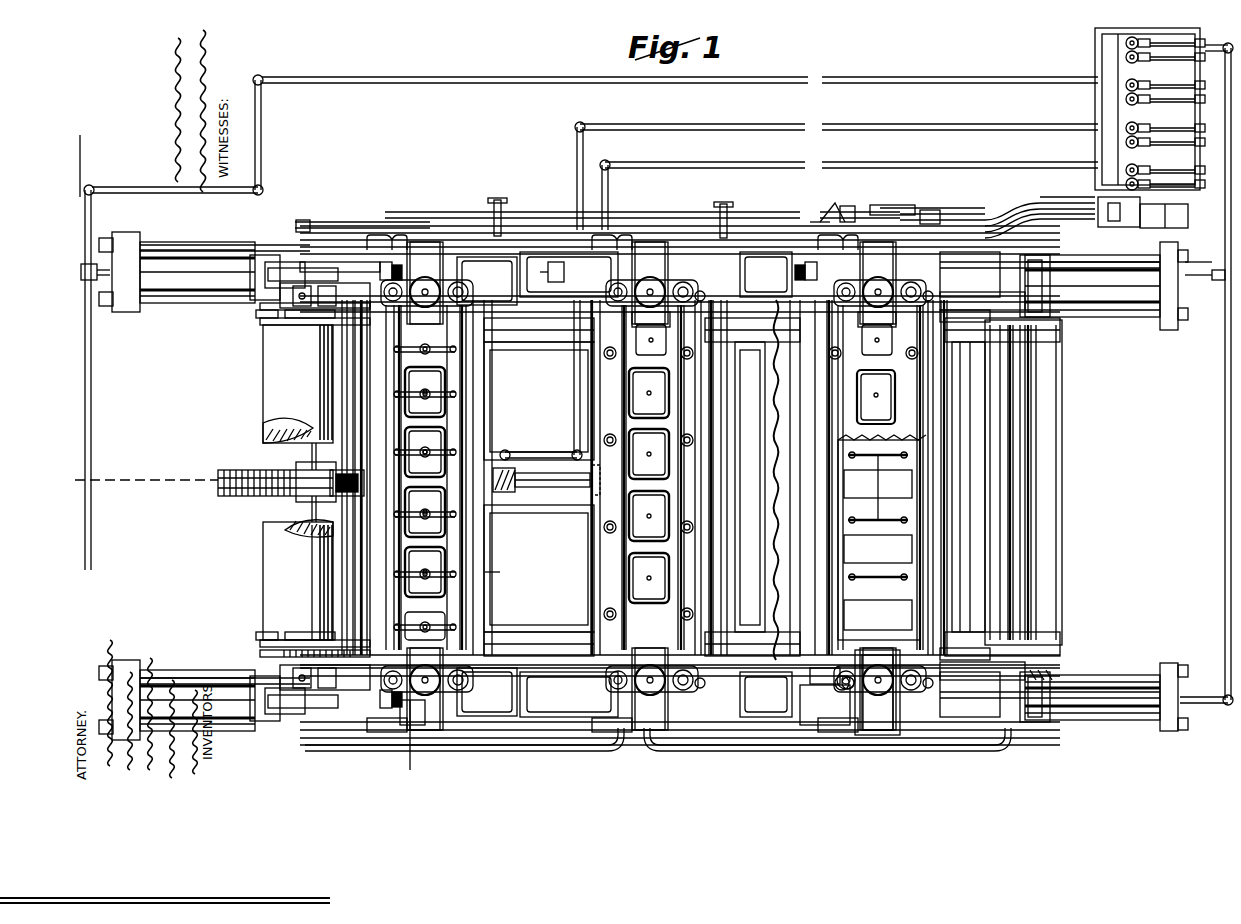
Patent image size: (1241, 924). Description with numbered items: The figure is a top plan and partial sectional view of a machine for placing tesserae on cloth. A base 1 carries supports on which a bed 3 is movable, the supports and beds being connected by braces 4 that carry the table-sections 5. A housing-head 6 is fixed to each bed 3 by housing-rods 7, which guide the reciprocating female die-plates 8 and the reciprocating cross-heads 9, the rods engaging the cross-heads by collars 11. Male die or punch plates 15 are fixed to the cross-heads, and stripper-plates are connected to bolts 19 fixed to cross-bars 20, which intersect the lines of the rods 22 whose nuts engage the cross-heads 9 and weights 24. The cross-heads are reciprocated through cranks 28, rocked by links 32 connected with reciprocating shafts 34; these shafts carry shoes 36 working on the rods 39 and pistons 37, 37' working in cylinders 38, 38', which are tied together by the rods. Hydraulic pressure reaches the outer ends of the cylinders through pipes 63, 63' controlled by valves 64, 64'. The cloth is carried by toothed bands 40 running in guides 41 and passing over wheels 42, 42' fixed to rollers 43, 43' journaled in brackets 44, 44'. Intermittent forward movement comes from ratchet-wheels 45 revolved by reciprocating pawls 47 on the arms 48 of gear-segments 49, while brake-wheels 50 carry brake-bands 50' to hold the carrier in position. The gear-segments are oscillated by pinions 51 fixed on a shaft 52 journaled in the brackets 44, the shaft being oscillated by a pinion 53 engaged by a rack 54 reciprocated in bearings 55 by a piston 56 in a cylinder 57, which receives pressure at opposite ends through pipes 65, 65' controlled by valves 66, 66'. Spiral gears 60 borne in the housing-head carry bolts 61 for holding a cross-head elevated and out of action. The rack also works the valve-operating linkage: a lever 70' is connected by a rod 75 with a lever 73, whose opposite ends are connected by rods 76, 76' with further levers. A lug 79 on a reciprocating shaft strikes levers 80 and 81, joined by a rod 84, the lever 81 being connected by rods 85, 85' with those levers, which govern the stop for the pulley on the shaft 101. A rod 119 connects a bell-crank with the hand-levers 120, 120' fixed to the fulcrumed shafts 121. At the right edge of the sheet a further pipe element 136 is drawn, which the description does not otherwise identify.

The base 1 is at (920, 752).
The bed 3 is at (244, 453).
The braces 4 is at (522, 330).
The table-sections 5 is at (785, 480).
The housing-head 6 is at (468, 418).
The housing-rods 7 is at (690, 292).
The female die-plates 8 is at (475, 573).
The cross-heads 9 is at (675, 498).
The collars 11 is at (818, 684).
The male die or punch plates 15 is at (900, 548).
The bolts 19 is at (905, 520).
The cross-bars 20 is at (940, 584).
The rods 22 is at (650, 396).
The weights 24 is at (435, 382).
The cranks 28 is at (395, 236).
The links 32 is at (385, 255).
The reciprocating shafts 34 is at (470, 258).
The shoes 36 is at (405, 725).
The piston 37 is at (340, 231).
The piston 37' is at (1024, 495).
The cylinder 38 is at (177, 482).
The cylinder 38' is at (1106, 486).
The rods 39 is at (214, 244).
The toothed bands 40 is at (975, 645).
The guides 41 is at (545, 335).
The wheel 42 is at (250, 475).
The wheel 42' is at (1025, 485).
The roller 43 is at (296, 477).
The roller 43' is at (1050, 482).
The bracket 44 is at (325, 486).
The bracket 44' is at (1025, 530).
The ratchet-wheels 45 is at (300, 325).
The reciprocating pawls 47 is at (260, 322).
The arms 48 is at (260, 307).
The gear-segments 49 is at (320, 360).
The brake-wheels 50 is at (303, 480).
The brake-bands 50' is at (283, 502).
The pinions 51 is at (328, 378).
The shaft 52 is at (312, 558).
The pinion 53 is at (330, 490).
The rack 54 is at (218, 490).
The bearings 55 is at (296, 466).
The piston 56 is at (508, 494).
The cylinder 57 is at (556, 488).
The spiral gears 60 is at (426, 278).
The bolts 61 is at (764, 333).
The pipe 63 is at (589, 322).
The pipe 63' is at (1206, 483).
The valve 64 is at (1128, 96).
The valve 64' is at (1122, 109).
The pipe 65 is at (799, 291).
The pipe 65' is at (849, 185).
The valve 66 is at (1128, 139).
The valve 66' is at (1132, 180).
The lever 70' is at (362, 215).
The lever 73 is at (955, 212).
The rod 75 is at (424, 238).
The rod 76 is at (1040, 210).
The rod 76' is at (1064, 183).
The lug 79 is at (830, 205).
The lever 80 is at (852, 208).
The lever 81 is at (918, 207).
The rod 84 is at (888, 205).
The rod 85 is at (1037, 199).
The rod 85' is at (1040, 206).
The shaft 101 is at (1170, 230).
The rod 119 is at (668, 225).
The hand-lever 120 is at (592, 195).
The hand-lever 120' is at (680, 751).
The fulcrumed shafts 121 is at (504, 210).
The pipe 136 is at (1200, 282).